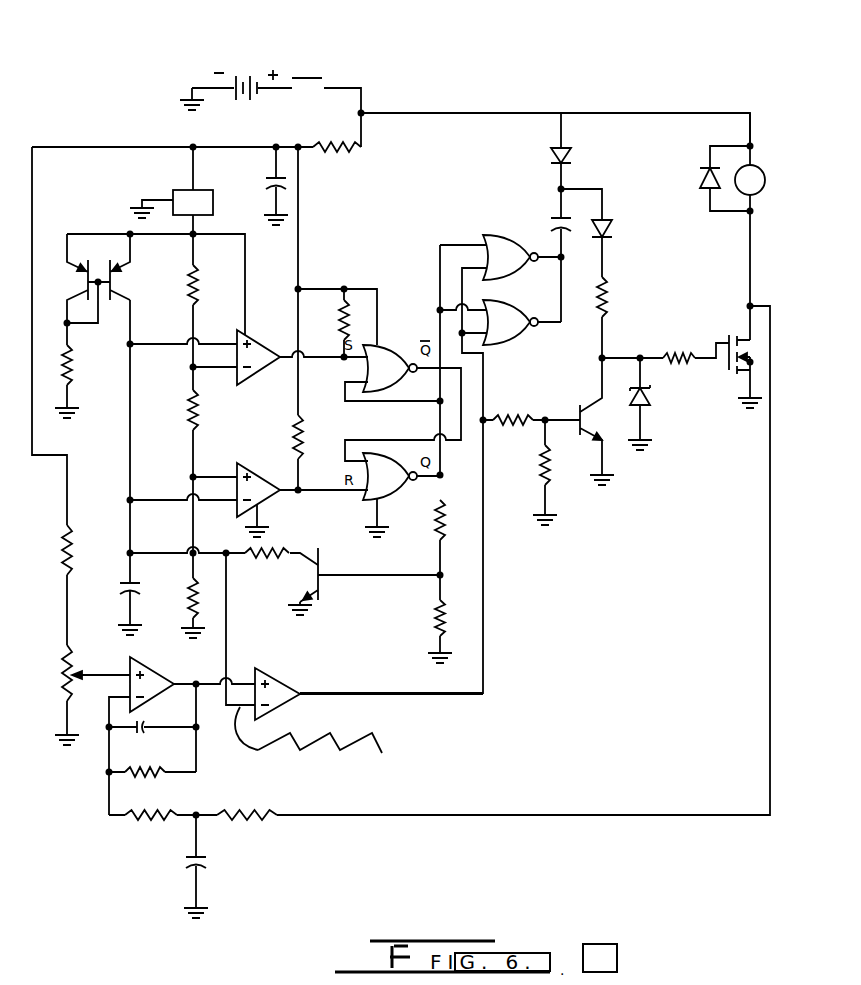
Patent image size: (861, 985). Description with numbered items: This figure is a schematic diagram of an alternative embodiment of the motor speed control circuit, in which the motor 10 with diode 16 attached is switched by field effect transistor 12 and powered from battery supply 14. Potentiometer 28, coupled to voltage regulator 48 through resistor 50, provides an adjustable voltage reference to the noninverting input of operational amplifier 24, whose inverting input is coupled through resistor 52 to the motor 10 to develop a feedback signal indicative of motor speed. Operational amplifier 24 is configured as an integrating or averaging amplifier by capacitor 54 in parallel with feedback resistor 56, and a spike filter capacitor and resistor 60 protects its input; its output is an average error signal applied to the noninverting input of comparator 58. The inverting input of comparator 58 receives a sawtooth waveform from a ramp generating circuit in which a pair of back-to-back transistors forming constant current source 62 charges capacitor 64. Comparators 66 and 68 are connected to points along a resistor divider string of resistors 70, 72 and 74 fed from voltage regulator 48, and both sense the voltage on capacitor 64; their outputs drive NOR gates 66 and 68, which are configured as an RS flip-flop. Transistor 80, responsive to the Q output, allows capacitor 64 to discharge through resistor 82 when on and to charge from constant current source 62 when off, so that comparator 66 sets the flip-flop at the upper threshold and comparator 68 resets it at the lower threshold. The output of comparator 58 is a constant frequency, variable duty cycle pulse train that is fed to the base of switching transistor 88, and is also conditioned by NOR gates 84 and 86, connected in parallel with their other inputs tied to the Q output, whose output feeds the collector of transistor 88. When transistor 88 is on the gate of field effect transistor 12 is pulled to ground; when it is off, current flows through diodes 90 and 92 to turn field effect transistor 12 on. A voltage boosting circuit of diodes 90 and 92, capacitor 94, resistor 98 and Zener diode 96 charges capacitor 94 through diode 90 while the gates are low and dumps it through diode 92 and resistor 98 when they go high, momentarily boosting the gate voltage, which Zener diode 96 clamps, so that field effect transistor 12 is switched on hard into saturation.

The motor 10 is at (758, 188).
The field effect transistor 12 is at (728, 360).
The battery supply 14 is at (246, 72).
The diode 16 is at (700, 178).
The operational amplifier 24 is at (165, 675).
The potentiometer 28 is at (62, 668).
The voltage regulator 48 is at (215, 196).
The resistor 50 is at (62, 548).
The resistor 52 is at (150, 822).
The capacitor 54 is at (143, 730).
The feedback resistor 56 is at (160, 780).
The comparator 58 is at (276, 692).
The spike filter capacitor and resistor 60 is at (240, 857).
The constant current source 62 is at (97, 228).
The capacitor 64 is at (118, 590).
The comparator and NOR gate 66 is at (256, 372).
The comparator and NOR gate 68 is at (248, 470).
The resistor 70 is at (190, 288).
The resistor 72 is at (190, 405).
The resistor 74 is at (188, 595).
The transistor 80 is at (320, 595).
The resistor 82 is at (258, 562).
The NOR gate 84 is at (495, 240).
The NOR gate 86 is at (525, 338).
The switching transistor 88 is at (582, 410).
The diode 90 is at (572, 155).
The diode 92 is at (612, 228).
The capacitor 94 is at (550, 225).
The Zener diode 96 is at (650, 398).
The resistor 98 is at (610, 296).